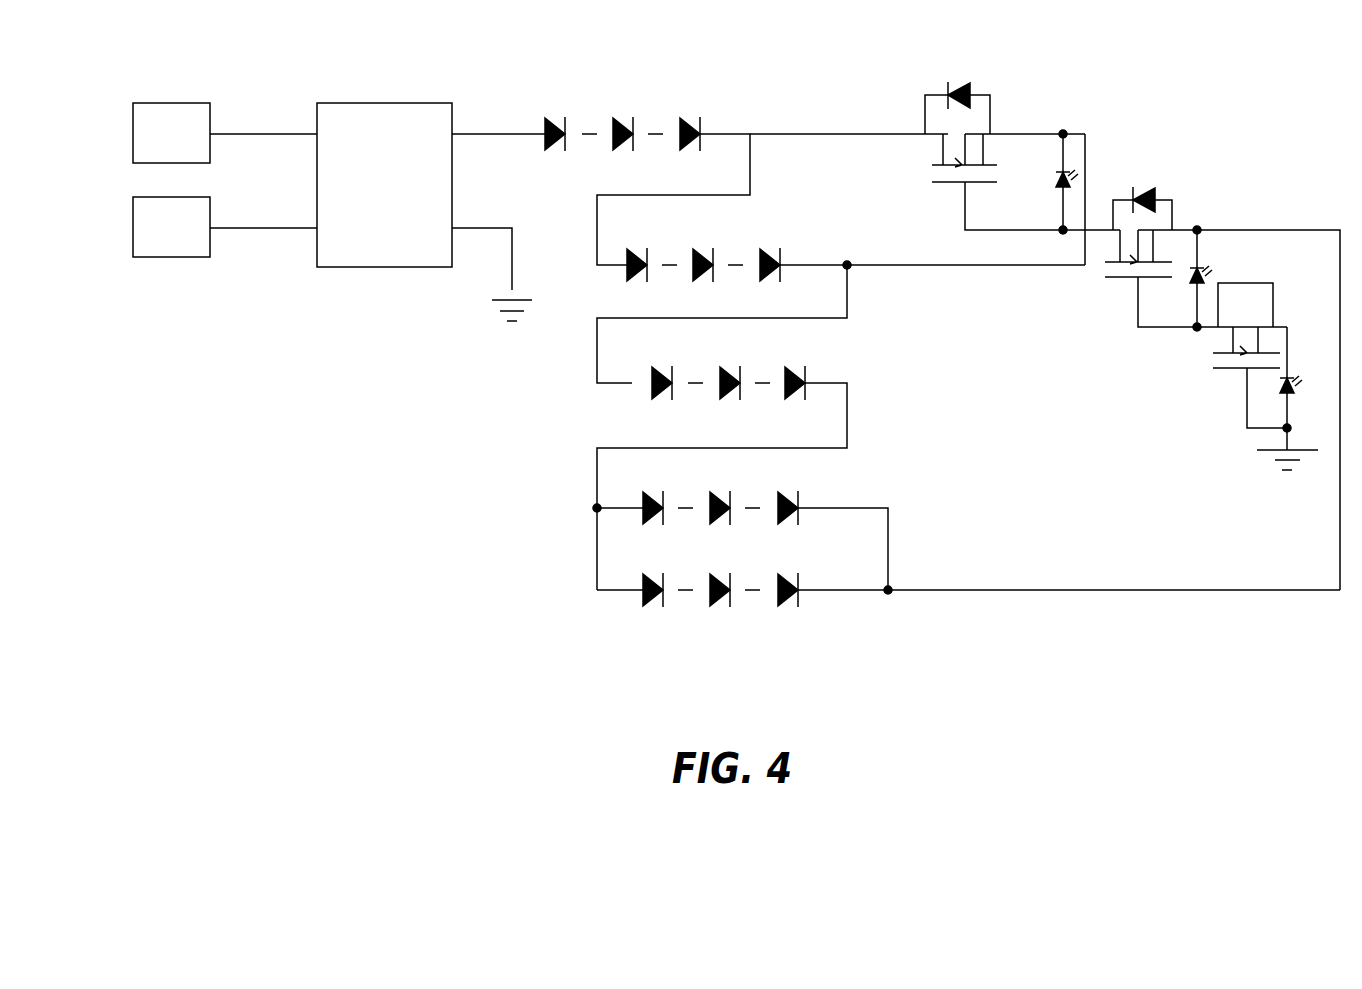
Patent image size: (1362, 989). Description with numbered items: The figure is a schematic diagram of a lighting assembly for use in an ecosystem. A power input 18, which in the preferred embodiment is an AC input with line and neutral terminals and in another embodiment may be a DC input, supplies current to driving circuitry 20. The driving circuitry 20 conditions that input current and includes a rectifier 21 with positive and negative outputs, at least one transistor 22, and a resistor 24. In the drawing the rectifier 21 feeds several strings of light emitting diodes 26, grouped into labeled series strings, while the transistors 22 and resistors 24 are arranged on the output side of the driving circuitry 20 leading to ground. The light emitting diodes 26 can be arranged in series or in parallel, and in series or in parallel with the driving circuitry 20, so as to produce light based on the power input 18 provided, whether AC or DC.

The power input 18 is at (125, 135).
The driving circuitry 20 is at (1080, 104).
The rectifier 21 is at (368, 103).
The transistor 22 is at (985, 97).
The resistor 24 is at (1050, 182).
The light emitting diodes 26 is at (654, 56).